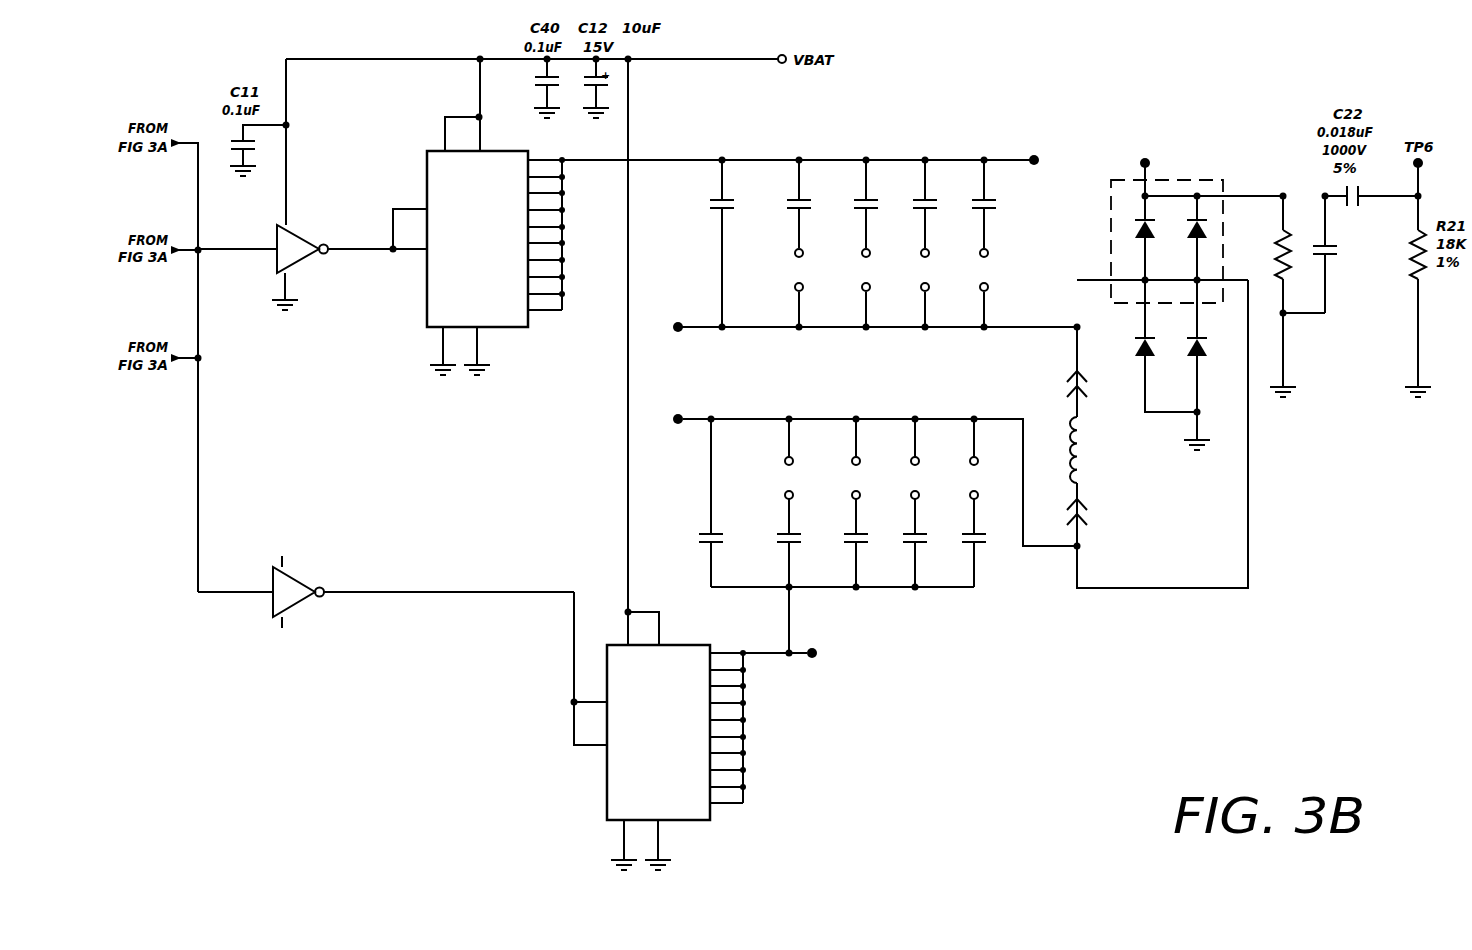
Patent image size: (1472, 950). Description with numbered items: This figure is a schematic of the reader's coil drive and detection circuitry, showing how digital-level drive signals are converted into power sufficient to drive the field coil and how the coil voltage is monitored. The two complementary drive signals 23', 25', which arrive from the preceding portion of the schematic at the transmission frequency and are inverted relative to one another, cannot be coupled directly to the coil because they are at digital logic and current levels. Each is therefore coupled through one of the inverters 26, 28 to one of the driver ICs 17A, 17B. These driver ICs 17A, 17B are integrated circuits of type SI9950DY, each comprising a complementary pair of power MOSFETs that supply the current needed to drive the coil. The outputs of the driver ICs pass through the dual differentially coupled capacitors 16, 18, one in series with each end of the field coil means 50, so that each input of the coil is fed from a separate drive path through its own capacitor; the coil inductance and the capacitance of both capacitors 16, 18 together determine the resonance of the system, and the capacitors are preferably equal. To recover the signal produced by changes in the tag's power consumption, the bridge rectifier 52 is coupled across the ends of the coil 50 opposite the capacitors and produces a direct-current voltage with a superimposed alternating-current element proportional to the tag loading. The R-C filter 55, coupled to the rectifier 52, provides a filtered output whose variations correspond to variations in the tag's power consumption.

The capacitor 16 is at (738, 132).
The driver IC 17A is at (427, 293).
The driver IC 17B is at (607, 790).
The capacitor 18 is at (942, 650).
The first drive signal 23' is at (161, 222).
The second drive signal 25' is at (161, 330).
The inverter 26 is at (276, 258).
The inverter 28 is at (290, 610).
The field coil means 50 is at (1093, 485).
The bridge rectifier 52 is at (1182, 180).
The R-C filter 55 is at (1309, 334).